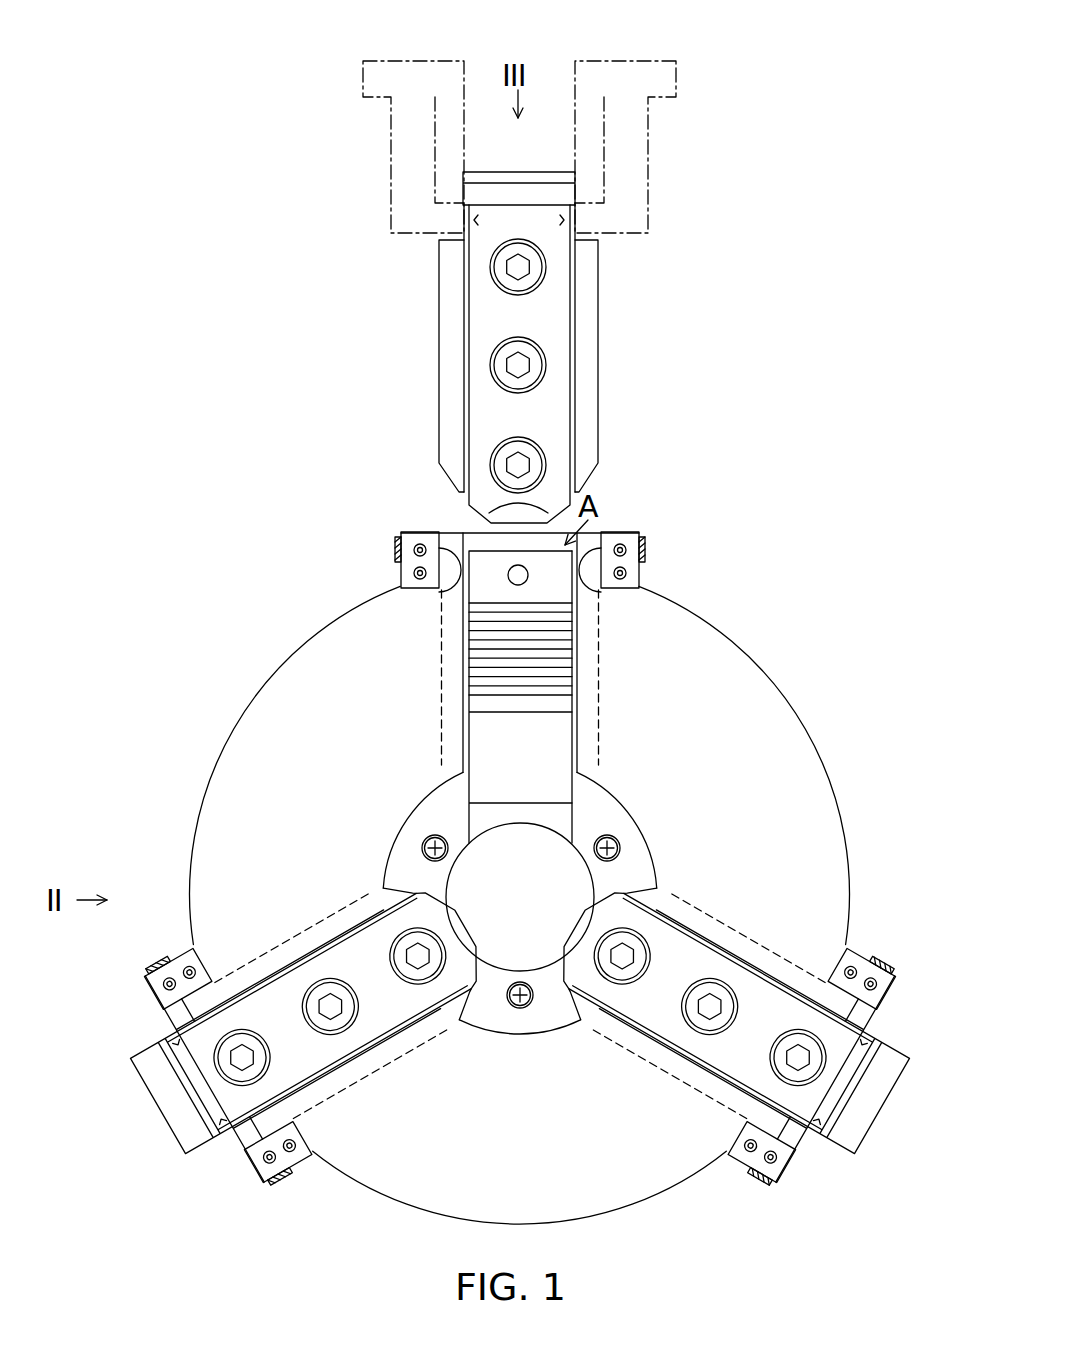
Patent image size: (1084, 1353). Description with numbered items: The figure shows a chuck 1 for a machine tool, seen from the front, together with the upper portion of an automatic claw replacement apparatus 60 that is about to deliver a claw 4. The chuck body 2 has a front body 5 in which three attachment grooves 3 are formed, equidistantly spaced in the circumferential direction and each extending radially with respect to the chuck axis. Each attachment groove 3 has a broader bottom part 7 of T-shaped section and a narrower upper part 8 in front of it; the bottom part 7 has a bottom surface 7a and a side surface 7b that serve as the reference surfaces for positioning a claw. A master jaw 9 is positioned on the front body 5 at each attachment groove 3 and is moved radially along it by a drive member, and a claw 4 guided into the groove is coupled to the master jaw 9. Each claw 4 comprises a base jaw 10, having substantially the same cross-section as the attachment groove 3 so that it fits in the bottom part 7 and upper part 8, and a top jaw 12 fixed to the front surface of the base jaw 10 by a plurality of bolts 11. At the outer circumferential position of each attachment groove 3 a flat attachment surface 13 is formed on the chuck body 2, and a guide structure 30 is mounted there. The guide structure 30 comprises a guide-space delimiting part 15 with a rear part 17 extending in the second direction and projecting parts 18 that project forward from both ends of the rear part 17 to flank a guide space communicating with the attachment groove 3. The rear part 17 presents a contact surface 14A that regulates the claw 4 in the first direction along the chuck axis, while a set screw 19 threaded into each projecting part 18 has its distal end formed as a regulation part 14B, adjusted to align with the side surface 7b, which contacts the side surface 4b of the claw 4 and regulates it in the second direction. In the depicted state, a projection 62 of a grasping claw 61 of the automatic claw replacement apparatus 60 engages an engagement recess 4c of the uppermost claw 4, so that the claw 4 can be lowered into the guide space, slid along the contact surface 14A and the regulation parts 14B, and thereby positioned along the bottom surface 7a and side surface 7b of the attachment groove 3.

The chuck 1 is at (790, 365).
The chuck body 2 is at (738, 647).
The attachment groove 3 is at (473, 732).
The claw 4 is at (606, 243).
The side surface 4b is at (440, 348).
The engagement recess 4c is at (463, 222).
The front body 5 is at (815, 762).
The bottom part 7 is at (445, 729).
The bottom surface 7a is at (598, 720).
The side surface 7b is at (600, 676).
The upper part 8 is at (573, 732).
The master jaw 9 is at (470, 665).
The base jaw 10 is at (597, 320).
The bolts 11 is at (547, 265).
The top jaw 12 is at (563, 375).
The attachment surface 13 is at (622, 588).
The contact surface 14A is at (450, 536).
The regulation part 14B is at (440, 592).
The guide-space delimiting part 15 is at (642, 523).
The rear part 17 is at (475, 528).
The projecting part 18 is at (402, 578).
The set screw 19 is at (398, 548).
The guide structure 30 is at (700, 505).
The automatic claw replacement apparatus 60 is at (690, 60).
The grasping claw 61 is at (410, 143).
The projection 62 is at (458, 215).